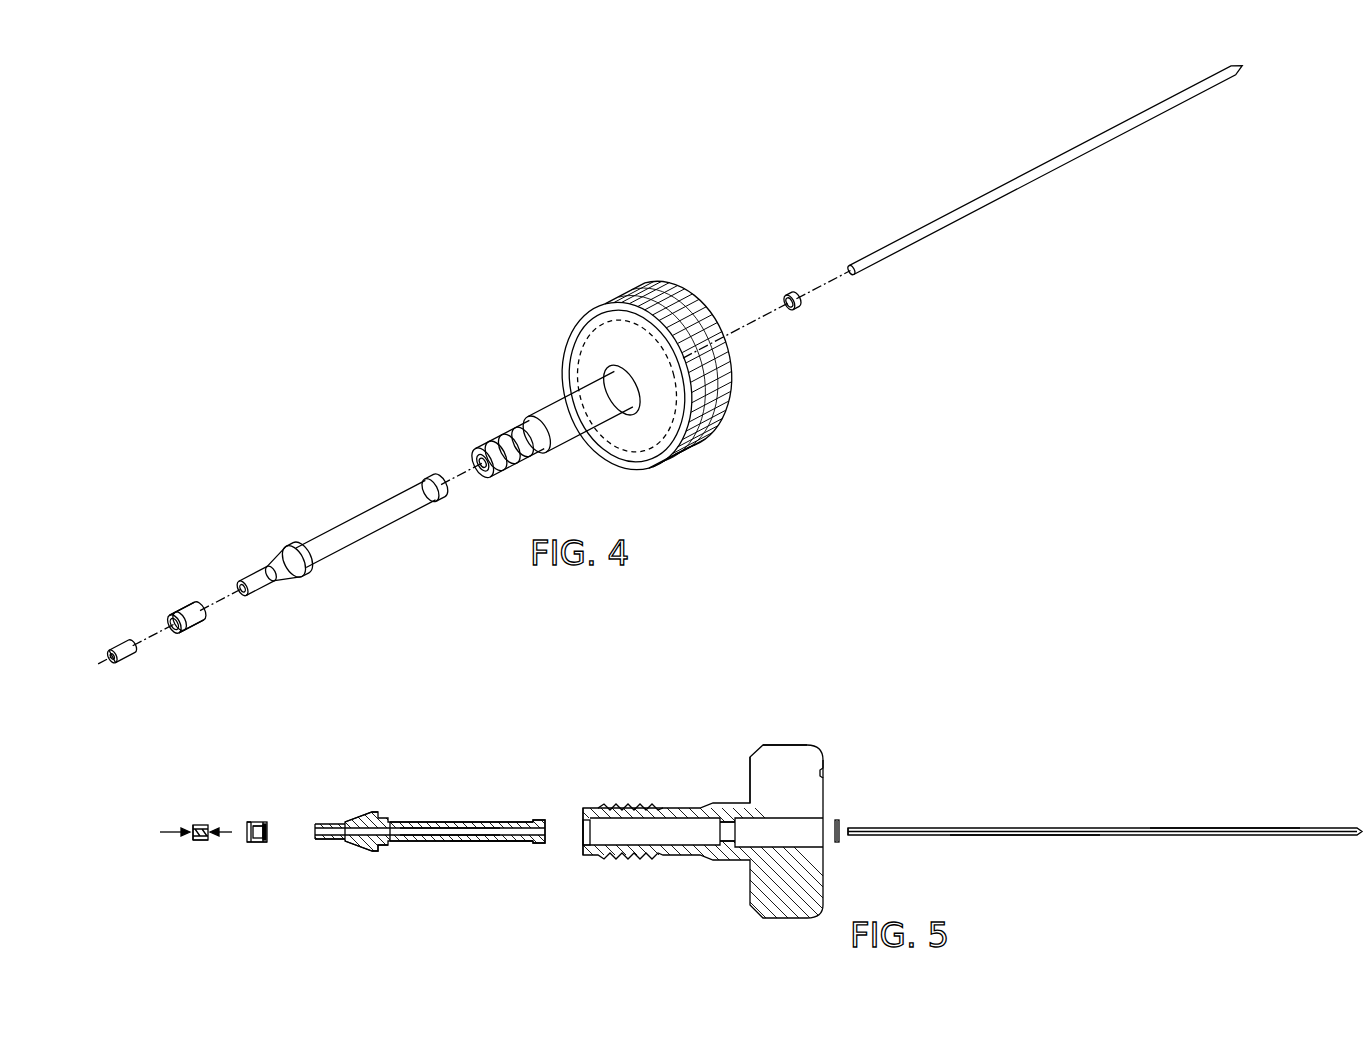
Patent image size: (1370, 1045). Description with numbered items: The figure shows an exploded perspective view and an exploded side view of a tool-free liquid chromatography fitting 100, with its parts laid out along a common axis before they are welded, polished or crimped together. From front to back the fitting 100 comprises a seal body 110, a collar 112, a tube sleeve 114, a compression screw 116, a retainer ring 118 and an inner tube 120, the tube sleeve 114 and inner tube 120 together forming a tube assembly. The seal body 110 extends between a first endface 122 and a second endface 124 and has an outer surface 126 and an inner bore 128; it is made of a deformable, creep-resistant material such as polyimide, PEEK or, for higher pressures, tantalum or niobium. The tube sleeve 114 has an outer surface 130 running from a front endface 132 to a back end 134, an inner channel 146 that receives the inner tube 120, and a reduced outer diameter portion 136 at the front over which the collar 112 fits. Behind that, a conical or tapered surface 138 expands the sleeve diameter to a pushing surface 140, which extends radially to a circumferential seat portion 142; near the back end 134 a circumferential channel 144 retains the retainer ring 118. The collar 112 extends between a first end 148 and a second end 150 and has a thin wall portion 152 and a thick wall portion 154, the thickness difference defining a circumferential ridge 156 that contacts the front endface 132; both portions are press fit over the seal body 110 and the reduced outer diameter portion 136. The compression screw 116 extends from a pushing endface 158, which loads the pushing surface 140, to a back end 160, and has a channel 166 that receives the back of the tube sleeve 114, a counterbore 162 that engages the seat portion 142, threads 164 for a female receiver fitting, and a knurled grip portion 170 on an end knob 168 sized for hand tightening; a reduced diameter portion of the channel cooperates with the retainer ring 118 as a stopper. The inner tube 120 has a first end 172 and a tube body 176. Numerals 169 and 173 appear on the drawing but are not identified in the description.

In FIG. 4, the fitting 100 is at (583, 96).
In FIG. 4, the seal body 110 is at (119, 646).
In FIG. 5, the seal body 110 is at (198, 825).
In FIG. 4, the collar 112 is at (192, 607).
In FIG. 5, the collar 112 is at (259, 822).
In FIG. 4, the tube sleeve 114 is at (383, 507).
In FIG. 5, the tube sleeve 114 is at (362, 813).
In FIG. 4, the compression screw 116 is at (546, 412).
In FIG. 5, the compression screw 116 is at (676, 808).
In FIG. 4, the retainer ring 118 is at (791, 290).
In FIG. 5, the retainer ring 118 is at (838, 820).
In FIG. 4, the inner tube 120 is at (1059, 152).
In FIG. 5, the inner tube 120 is at (1074, 828).
In FIG. 5, the first endface 122 is at (232, 832).
In FIG. 4, the second endface 124 is at (118, 660).
In FIG. 5, the second endface 124 is at (160, 832).
In FIG. 5, the outer surface 126 is at (198, 841).
In FIG. 5, the inner bore 128 is at (193, 827).
In FIG. 5, the outer surface 130 is at (442, 822).
In FIG. 4, the front endface 132 is at (243, 580).
In FIG. 5, the front endface 132 is at (309, 829).
In FIG. 5, the back end 134 is at (540, 822).
In FIG. 5, the reduced outer diameter portion 136 is at (322, 842).
In FIG. 5, the conical or tapered surface 138 is at (366, 848).
In FIG. 5, the pushing surface 140 is at (381, 810).
In FIG. 5, the circumferential seat portion 142 is at (382, 847).
In FIG. 5, the circumferential channel 144 is at (533, 842).
In FIG. 5, the inner channel 146 is at (481, 831).
In FIG. 4, the first end 148 is at (206, 620).
In FIG. 5, the first end 148 is at (262, 843).
In FIG. 4, the second end 150 is at (178, 618).
In FIG. 5, the thin wall portion 152 is at (265, 823).
In FIG. 5, the thick wall portion 154 is at (253, 843).
In FIG. 5, the circumferential ridge 156 is at (267, 842).
In FIG. 5, the pushing endface 158 is at (250, 822).
In FIG. 5, the back end 160 is at (826, 768).
In FIG. 5, the counterbore 162 is at (583, 845).
In FIG. 5, the threads 164 is at (616, 804).
In FIG. 5, the channel 166 is at (642, 834).
In FIG. 5, the end knob 168 is at (757, 770).
In FIG. 5, the lumen neck 169 is at (725, 842).
In FIG. 5, the knurled grip portion 170 is at (793, 720).
In FIG. 5, the first end 172 is at (843, 838).
In FIG. 5, the rod lower surface 173 is at (1018, 837).
In FIG. 5, the tube body 176 is at (1228, 828).